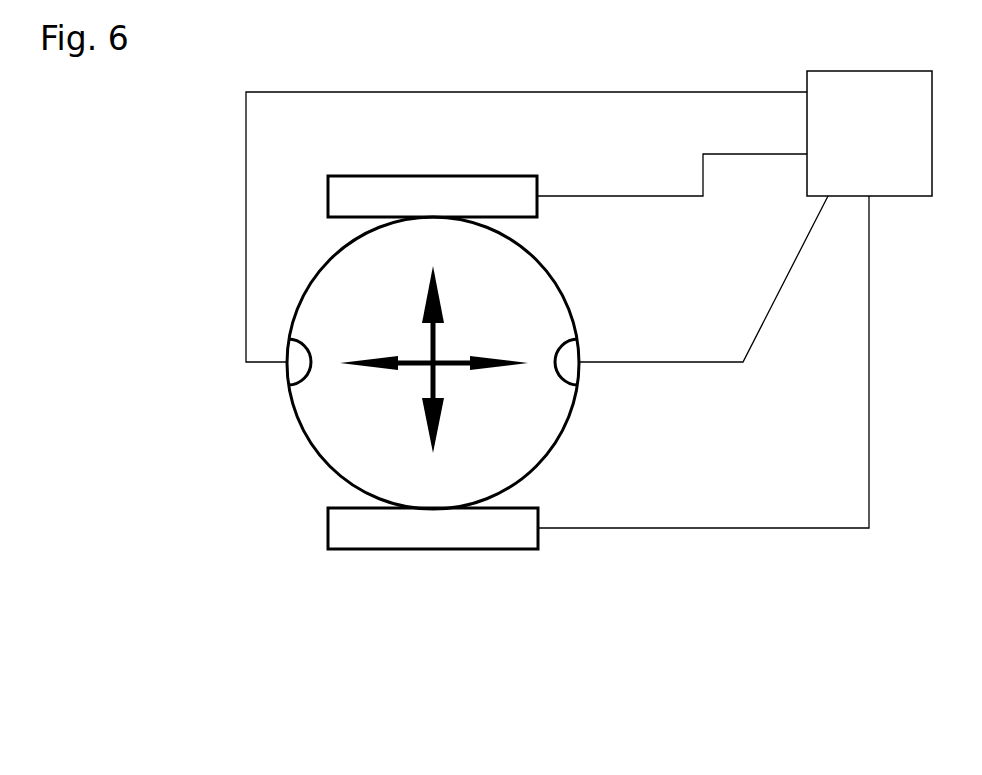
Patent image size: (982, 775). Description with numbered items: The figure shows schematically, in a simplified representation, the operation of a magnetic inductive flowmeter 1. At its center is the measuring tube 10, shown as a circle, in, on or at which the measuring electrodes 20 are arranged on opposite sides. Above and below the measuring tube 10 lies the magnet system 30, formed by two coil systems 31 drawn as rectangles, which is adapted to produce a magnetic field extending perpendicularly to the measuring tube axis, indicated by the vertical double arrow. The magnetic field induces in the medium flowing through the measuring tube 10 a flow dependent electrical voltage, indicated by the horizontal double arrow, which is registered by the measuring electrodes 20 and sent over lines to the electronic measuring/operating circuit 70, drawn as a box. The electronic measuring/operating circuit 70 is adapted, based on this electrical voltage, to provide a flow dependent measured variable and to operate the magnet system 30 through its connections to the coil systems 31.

The magnetic inductive flowmeter 1 is at (225, 507).
The measuring tube 10 is at (537, 257).
The measuring electrodes 20 is at (298, 362).
The magnet system 30 is at (328, 569).
The coil systems 31 is at (370, 195).
The electronic measuring/operating circuit 70 is at (589, 299).